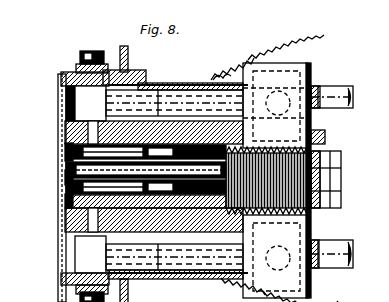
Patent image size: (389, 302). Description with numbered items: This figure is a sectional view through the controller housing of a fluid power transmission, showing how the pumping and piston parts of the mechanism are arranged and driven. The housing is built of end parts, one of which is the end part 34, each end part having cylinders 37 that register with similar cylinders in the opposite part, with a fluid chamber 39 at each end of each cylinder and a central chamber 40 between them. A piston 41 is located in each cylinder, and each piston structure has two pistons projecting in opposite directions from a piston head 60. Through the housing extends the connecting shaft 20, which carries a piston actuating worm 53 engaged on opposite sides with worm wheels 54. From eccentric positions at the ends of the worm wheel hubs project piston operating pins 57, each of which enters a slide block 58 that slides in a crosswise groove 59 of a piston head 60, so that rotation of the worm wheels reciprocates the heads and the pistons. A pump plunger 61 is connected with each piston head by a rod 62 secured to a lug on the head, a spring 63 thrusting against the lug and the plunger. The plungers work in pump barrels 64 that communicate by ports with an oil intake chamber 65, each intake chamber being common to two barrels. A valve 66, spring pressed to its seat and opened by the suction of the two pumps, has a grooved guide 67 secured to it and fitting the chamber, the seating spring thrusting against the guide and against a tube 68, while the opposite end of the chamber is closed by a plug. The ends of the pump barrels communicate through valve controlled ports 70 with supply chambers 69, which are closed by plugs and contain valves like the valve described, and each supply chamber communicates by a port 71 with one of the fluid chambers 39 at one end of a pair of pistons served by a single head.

The connecting shaft 20 is at (318, 166).
The end part of housing 34 is at (62, 128).
The cylinder 37 is at (172, 80).
The fluid chamber 39 is at (72, 249).
The central chamber 40 is at (320, 192).
The piston 41 is at (146, 262).
The piston actuating worm 53 is at (318, 162).
The worm wheel 54 is at (272, 46).
The piston operating pin 57 is at (306, 82).
The slide block 58 is at (300, 62).
The crosswise groove 59 is at (306, 236).
The piston head 60 is at (322, 88).
The pump plunger 61 is at (266, 100).
The rod 62 is at (280, 98).
The spring 63 is at (300, 140).
The pump barrel 64 is at (196, 84).
The oil intake chamber 65 is at (208, 70).
The valve 66 is at (275, 256).
The grooved guide 67 is at (196, 238).
The tube 68 is at (60, 180).
The supply chamber 69 is at (70, 103).
The valve controlled port 70 is at (142, 92).
The port 71 is at (56, 90).